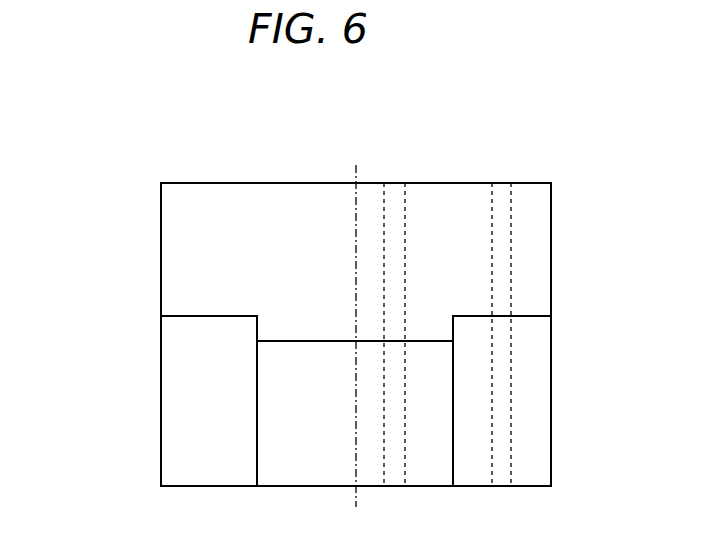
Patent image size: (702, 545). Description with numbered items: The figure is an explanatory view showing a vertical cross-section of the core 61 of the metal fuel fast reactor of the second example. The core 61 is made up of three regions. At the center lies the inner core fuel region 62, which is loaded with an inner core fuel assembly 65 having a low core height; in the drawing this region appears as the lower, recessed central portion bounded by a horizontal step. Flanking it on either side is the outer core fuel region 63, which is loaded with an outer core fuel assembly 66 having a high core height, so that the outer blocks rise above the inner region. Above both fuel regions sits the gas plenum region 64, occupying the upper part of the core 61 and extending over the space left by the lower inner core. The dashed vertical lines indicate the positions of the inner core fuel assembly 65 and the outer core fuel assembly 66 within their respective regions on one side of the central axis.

The core 61 is at (309, 172).
The inner core fuel region 62 is at (325, 362).
The outer core fuel region 63 is at (180, 400).
The gas plenum region 64 is at (207, 220).
The inner core fuel assembly 65 is at (393, 182).
The outer core fuel assembly 66 is at (500, 182).